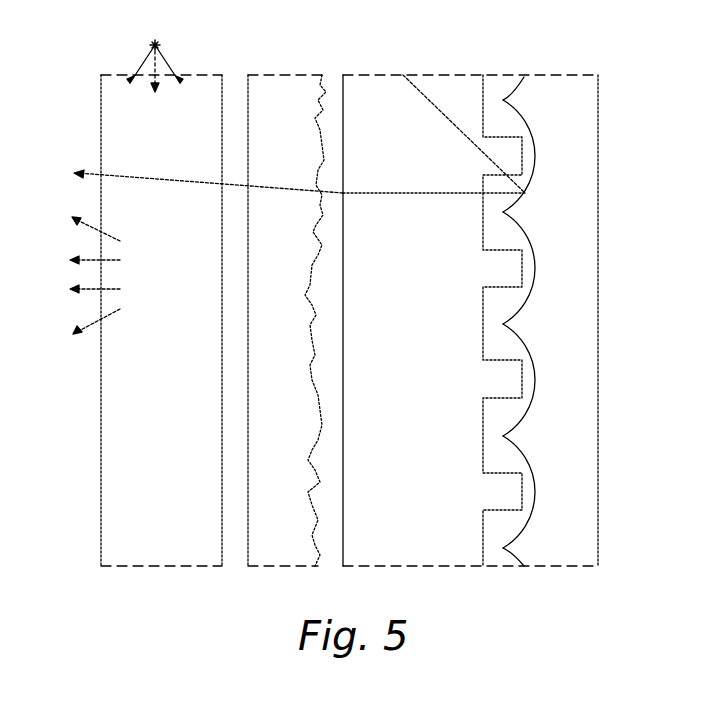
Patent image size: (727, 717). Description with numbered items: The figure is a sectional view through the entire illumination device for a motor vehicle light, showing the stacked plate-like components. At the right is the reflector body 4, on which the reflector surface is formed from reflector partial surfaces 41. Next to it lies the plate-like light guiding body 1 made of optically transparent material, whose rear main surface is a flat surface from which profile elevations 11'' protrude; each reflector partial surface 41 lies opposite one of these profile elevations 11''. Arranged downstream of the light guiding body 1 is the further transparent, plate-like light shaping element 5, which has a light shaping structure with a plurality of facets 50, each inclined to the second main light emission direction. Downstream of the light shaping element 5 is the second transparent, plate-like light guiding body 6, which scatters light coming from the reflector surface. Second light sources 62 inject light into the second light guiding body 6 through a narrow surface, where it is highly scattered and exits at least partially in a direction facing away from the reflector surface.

The light guiding body 1 is at (470, 88).
The reflector body 4 is at (580, 95).
The light shaping element 5 is at (265, 83).
The second light guiding body 6 is at (112, 100).
The profile elevations 11'' is at (575, 320).
The reflector partial surfaces 41 is at (535, 268).
The facets 50 is at (324, 140).
The second light sources 62 is at (148, 46).